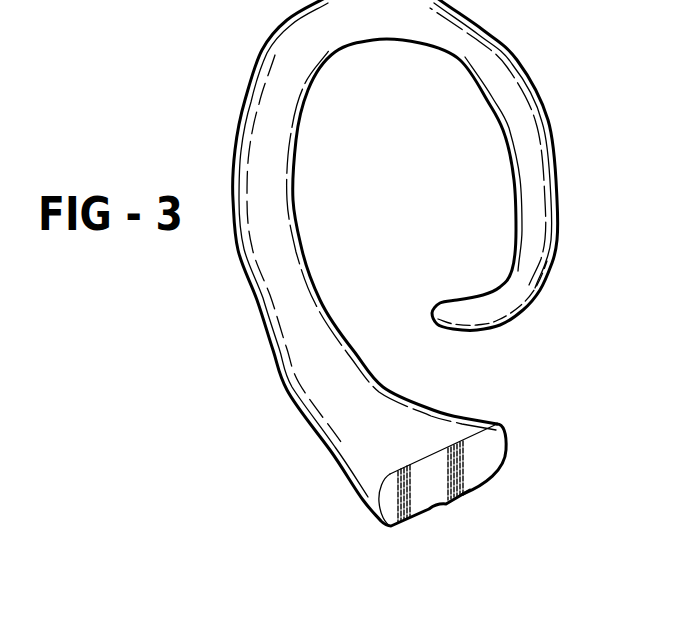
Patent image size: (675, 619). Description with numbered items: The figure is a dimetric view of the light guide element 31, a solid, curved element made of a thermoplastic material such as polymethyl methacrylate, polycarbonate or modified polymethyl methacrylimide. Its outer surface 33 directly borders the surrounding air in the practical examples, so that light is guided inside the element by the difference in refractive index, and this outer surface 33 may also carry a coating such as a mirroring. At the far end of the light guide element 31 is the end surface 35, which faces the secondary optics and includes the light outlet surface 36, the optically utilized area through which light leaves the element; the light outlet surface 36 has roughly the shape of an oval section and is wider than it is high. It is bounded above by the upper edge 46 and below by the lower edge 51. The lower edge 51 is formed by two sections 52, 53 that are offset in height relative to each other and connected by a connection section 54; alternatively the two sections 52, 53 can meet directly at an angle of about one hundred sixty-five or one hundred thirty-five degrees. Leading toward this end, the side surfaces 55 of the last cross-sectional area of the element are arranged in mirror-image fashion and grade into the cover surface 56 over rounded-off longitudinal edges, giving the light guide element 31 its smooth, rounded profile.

The light guide element 31 is at (530, 176).
The outer surface 33 is at (477, 61).
The end surface 35 is at (487, 431).
The light outlet surface 36 is at (477, 459).
The upper edge 46 is at (457, 442).
The lower edge 51 is at (431, 505).
The section 52 is at (399, 525).
The section 53 is at (465, 494).
The connection section 54 is at (447, 504).
The side surfaces 55 is at (356, 468).
The cover surface 56 is at (422, 418).